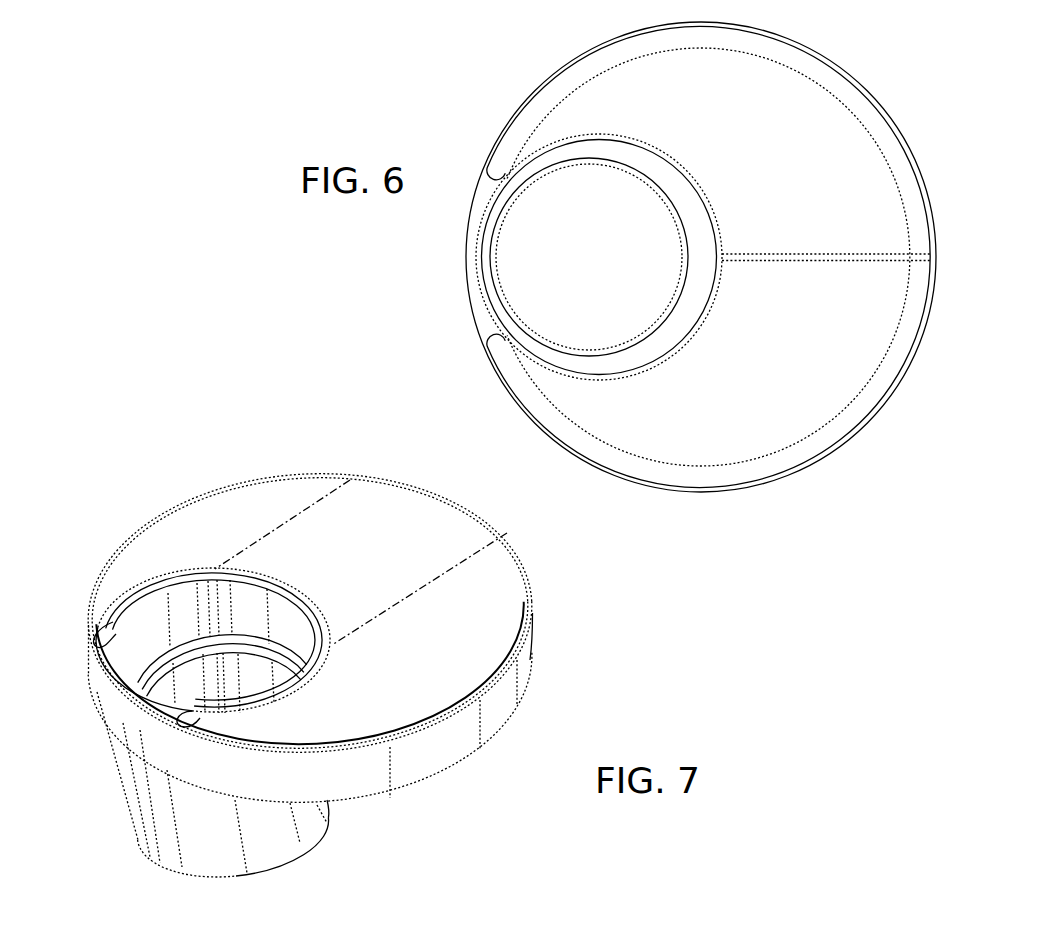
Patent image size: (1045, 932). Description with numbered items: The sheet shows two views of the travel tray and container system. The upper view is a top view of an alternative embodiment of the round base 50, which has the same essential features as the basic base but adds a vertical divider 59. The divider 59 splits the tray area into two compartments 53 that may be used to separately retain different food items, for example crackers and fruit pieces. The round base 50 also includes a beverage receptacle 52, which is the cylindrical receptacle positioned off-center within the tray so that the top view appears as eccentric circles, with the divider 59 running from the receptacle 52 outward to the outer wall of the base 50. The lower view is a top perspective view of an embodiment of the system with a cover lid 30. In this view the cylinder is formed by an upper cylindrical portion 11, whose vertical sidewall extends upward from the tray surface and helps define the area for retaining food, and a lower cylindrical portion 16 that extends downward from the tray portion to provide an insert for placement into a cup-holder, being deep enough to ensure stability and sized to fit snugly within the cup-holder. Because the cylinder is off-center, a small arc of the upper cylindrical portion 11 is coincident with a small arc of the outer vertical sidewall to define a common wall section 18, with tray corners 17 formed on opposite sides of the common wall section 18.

In FIG. 6, the round base 50 is at (909, 102).
In FIG. 6, the beverage receptacle 52 is at (655, 280).
In FIG. 6, the compartments 53 is at (747, 135).
In FIG. 6, the vertical divider 59 is at (810, 260).
In FIG. 7, the lid 30 is at (237, 534).
In FIG. 7, the upper cylindrical portion 11 is at (167, 640).
In FIG. 7, the lower cylindrical portion 16 is at (215, 842).
In FIG. 7, the tray corners 17 is at (98, 652).
In FIG. 7, the common wall section 18 is at (137, 700).